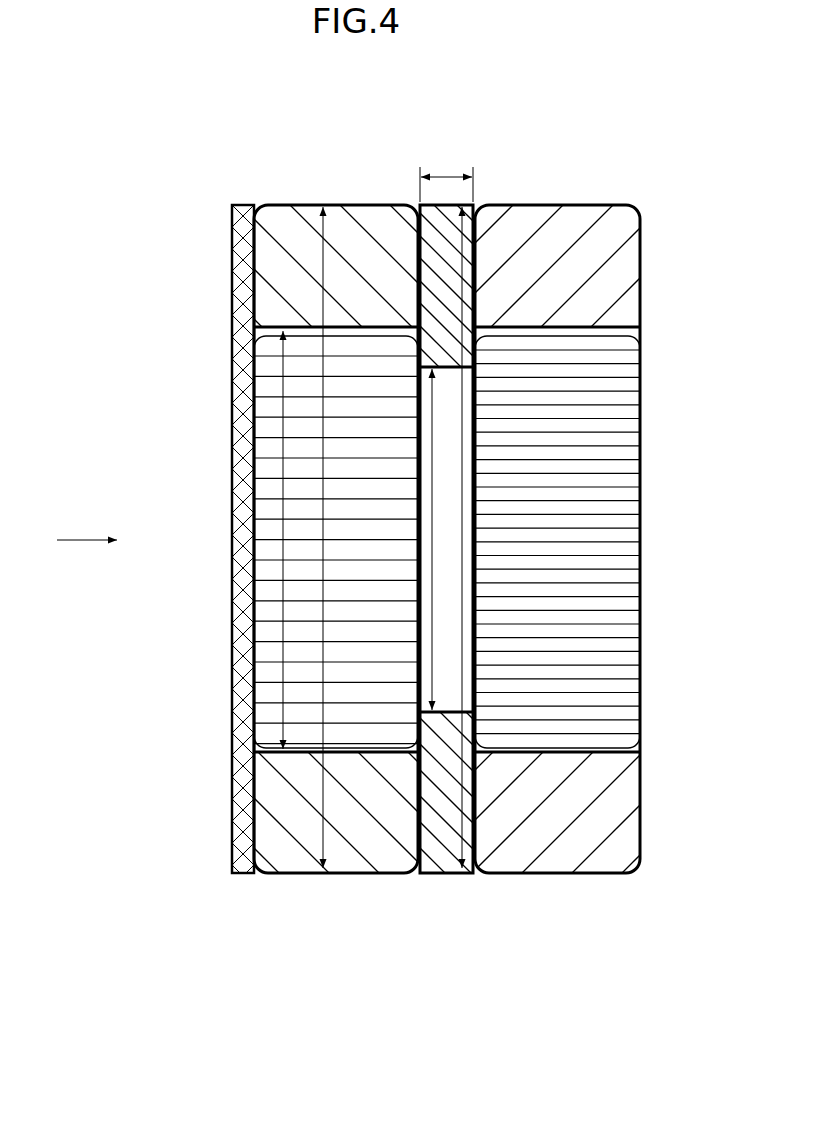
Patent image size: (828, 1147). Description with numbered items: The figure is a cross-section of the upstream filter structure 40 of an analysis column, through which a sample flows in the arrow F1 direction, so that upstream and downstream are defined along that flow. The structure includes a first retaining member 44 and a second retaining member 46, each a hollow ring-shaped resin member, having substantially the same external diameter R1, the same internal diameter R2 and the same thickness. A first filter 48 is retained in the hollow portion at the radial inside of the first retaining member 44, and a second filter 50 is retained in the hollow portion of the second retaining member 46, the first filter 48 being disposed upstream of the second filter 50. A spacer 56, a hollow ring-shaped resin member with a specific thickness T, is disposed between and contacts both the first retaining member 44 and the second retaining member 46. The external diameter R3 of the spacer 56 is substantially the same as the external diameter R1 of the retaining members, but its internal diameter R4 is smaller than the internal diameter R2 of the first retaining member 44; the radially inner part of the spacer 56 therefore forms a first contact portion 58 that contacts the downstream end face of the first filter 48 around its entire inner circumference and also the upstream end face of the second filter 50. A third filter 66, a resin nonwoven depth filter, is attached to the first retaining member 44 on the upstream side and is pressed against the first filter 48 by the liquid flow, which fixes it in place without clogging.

The upstream filter structure 40 is at (338, 1013).
The first retaining member 44 is at (332, 878).
The second retaining member 46 is at (556, 878).
The first filter 48 is at (300, 753).
The second filter 50 is at (603, 754).
The spacer 56 is at (452, 878).
The first contact portion 58 is at (442, 732).
The third filter 66 is at (242, 878).
The external diameter R1 is at (323, 255).
The internal diameter R2 is at (283, 372).
The external diameter of spacer R3 is at (464, 468).
The internal diameter of spacer R4 is at (432, 452).
The thickness T is at (445, 172).
The arrow F1 direction F1 is at (80, 539).